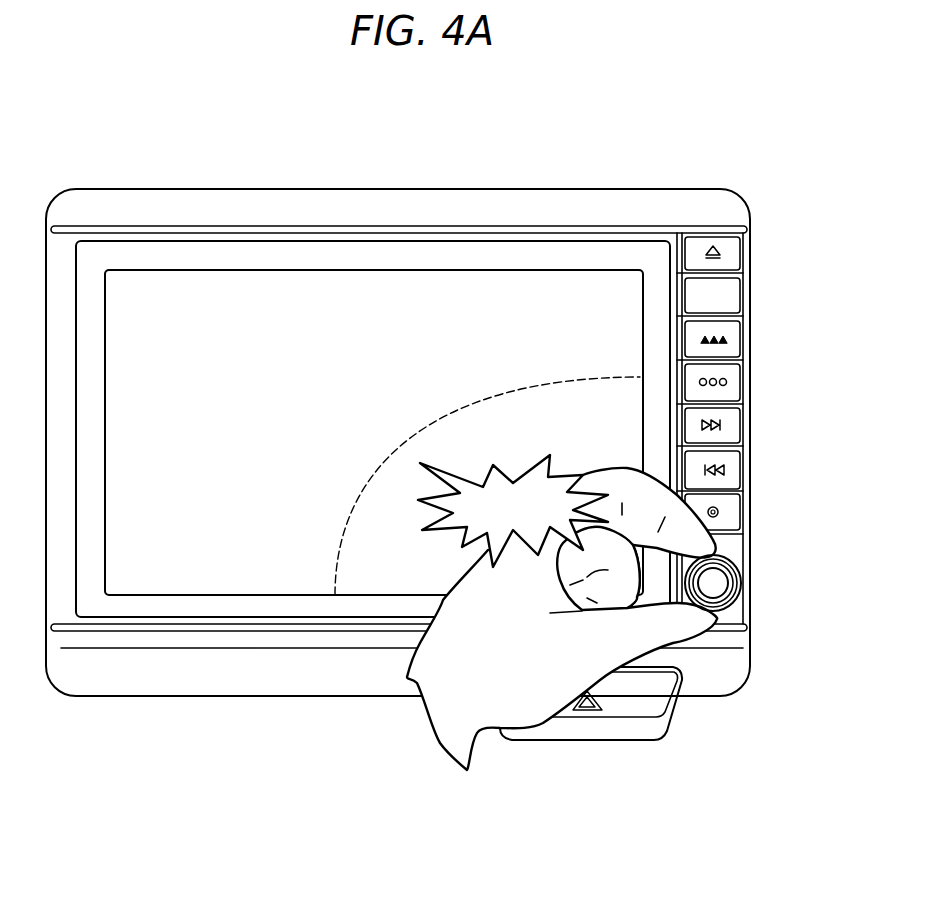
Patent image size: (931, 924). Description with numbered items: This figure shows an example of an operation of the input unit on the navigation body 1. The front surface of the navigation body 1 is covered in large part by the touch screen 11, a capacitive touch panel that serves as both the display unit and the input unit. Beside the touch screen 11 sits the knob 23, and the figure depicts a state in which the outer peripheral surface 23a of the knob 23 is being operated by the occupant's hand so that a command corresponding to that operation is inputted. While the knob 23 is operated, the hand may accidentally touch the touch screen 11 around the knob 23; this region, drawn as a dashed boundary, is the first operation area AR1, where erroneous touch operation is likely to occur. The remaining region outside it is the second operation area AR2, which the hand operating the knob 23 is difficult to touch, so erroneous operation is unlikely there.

The navigation body 1 is at (466, 190).
The touch screen 11 is at (277, 298).
The first operation area AR1 is at (510, 405).
The second operation area AR2 is at (373, 328).
The knob 23 is at (741, 582).
The outer peripheral surface 23a is at (741, 594).